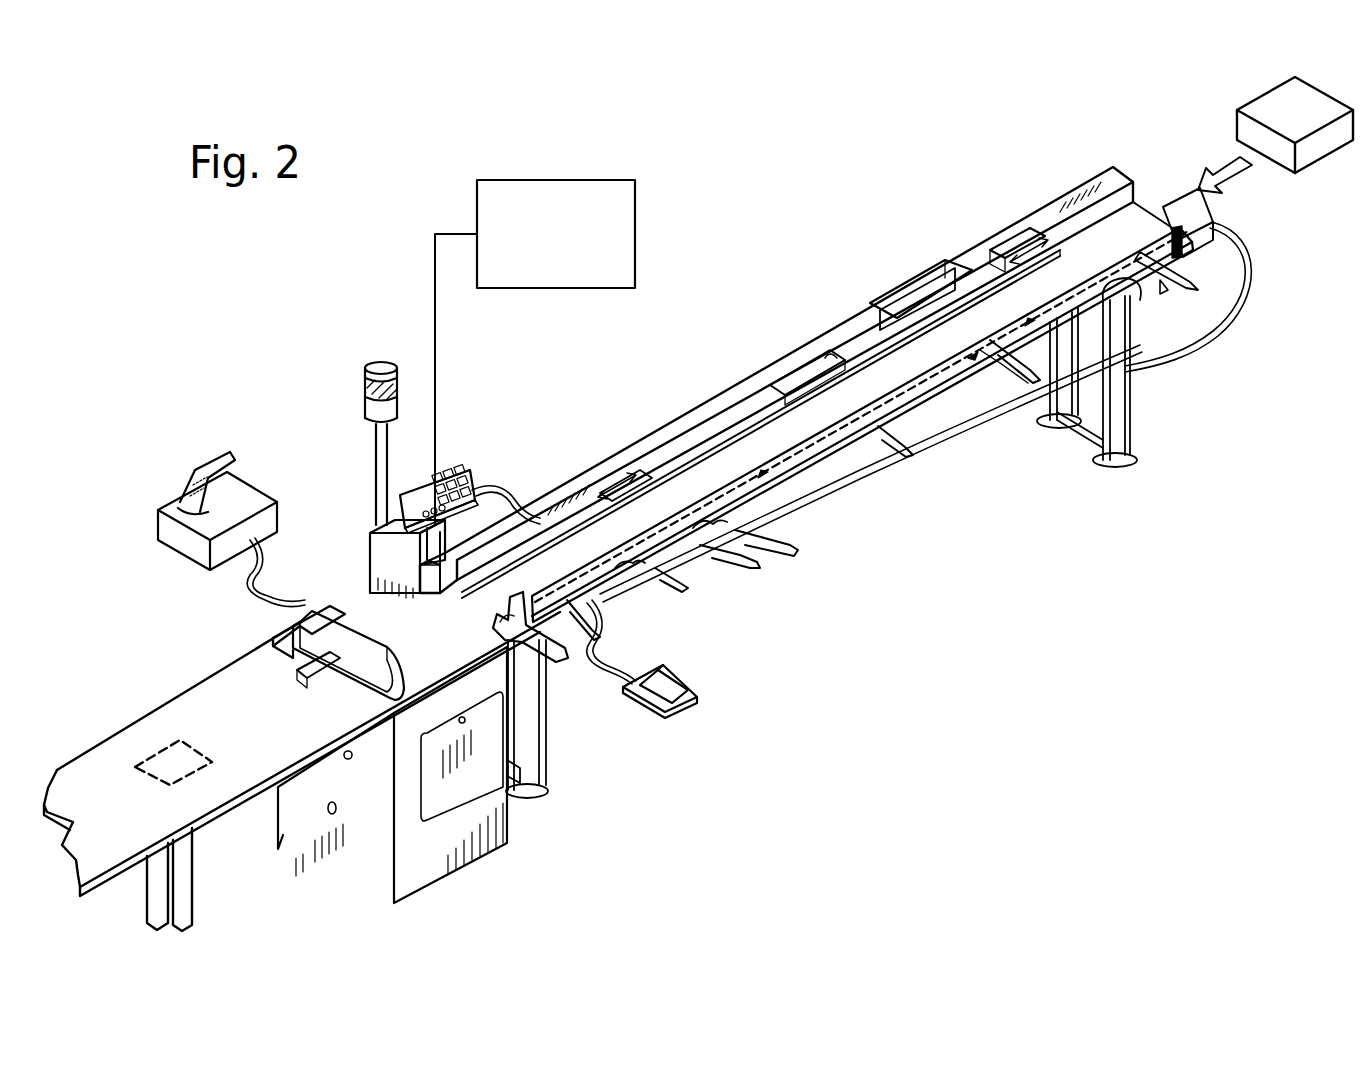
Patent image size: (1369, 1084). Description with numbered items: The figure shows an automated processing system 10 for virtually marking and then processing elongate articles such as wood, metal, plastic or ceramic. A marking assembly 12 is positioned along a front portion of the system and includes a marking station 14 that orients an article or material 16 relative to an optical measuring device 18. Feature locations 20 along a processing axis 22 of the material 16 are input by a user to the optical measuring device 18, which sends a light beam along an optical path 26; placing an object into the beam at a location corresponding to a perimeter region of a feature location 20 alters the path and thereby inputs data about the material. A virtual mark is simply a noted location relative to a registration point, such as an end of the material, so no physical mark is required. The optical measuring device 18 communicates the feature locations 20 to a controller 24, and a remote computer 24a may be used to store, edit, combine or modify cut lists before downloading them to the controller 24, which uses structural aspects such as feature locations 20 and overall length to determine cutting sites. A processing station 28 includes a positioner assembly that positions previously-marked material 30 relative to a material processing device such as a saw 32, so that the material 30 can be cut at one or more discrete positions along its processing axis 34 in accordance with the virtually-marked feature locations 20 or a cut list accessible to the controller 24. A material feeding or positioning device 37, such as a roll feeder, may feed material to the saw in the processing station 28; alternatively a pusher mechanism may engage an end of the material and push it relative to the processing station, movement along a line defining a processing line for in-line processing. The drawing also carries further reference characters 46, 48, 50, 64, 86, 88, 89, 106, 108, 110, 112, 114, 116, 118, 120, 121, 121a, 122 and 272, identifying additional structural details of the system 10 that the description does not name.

The automated processing system 10 is at (395, 325).
The marking assembly 12 is at (1225, 205).
The marking station 14 is at (862, 432).
The article or material 16 is at (668, 555).
The optical measuring device 18 is at (1200, 245).
The feature locations 20 is at (1022, 372).
The processing axis 22 is at (815, 452).
The controller 24 is at (402, 488).
The computer 24a is at (637, 171).
The optical path 26 is at (722, 556).
The station 28 is at (781, 364).
The previously-marked material 30 is at (831, 373).
The saw 32 is at (309, 659).
The processing axis 34 is at (625, 480).
The material feeding or positioning device 37 is at (1262, 110).
The conveyor chain path 46 is at (1065, 282).
The support bracket 48 is at (505, 632).
The cable 50 is at (1195, 350).
The bracket 64 is at (778, 548).
The cable 86 is at (462, 468).
The foot pedal 88 is at (668, 672).
The indicator lamp 89 is at (365, 412).
The sliding block 106 is at (822, 362).
The fence 108 is at (1035, 248).
The table top 110 is at (1140, 212).
The sliding block 112 is at (995, 262).
The guide rail 114 is at (752, 418).
The stop bar 116 is at (295, 688).
The housing 118 is at (370, 552).
The sliding block 120 is at (910, 295).
The infeed table 121 is at (193, 703).
The marked area 121a is at (157, 760).
The stop block 122 is at (355, 660).
The printer 272 is at (185, 500).